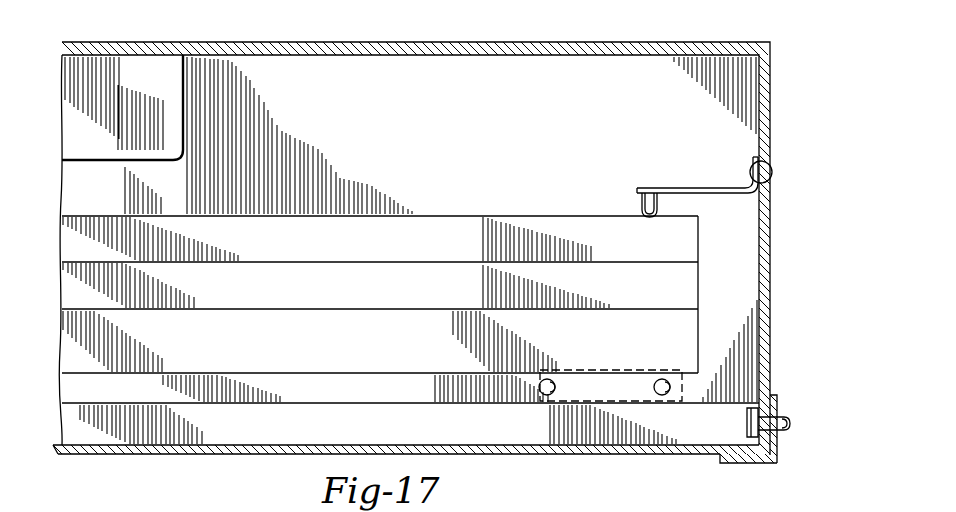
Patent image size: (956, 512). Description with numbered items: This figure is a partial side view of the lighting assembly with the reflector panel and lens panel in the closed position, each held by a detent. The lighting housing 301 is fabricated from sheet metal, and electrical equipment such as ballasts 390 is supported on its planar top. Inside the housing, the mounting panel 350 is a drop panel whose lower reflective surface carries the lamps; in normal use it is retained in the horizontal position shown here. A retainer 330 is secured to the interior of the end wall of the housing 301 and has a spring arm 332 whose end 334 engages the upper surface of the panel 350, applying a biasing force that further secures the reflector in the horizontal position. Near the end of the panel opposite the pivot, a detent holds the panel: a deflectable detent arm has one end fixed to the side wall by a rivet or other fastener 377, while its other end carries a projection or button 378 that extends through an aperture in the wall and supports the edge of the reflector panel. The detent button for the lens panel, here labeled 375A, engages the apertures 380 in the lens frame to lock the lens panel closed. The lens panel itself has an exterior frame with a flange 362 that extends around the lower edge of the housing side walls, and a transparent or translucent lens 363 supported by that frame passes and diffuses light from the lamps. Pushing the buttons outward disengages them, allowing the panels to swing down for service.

The lighting housing 301 is at (772, 108).
The ballasts 390 is at (132, 75).
The mounting panel 350 is at (360, 247).
The retainer 330 is at (700, 185).
The end 334 is at (640, 196).
The spring arm 332 is at (713, 194).
The detent button 378 is at (547, 396).
The fastener 377 is at (660, 396).
The lens 363 is at (532, 455).
The flange 362 is at (777, 400).
The pin 375A is at (789, 412).
The apertures 380 is at (780, 443).